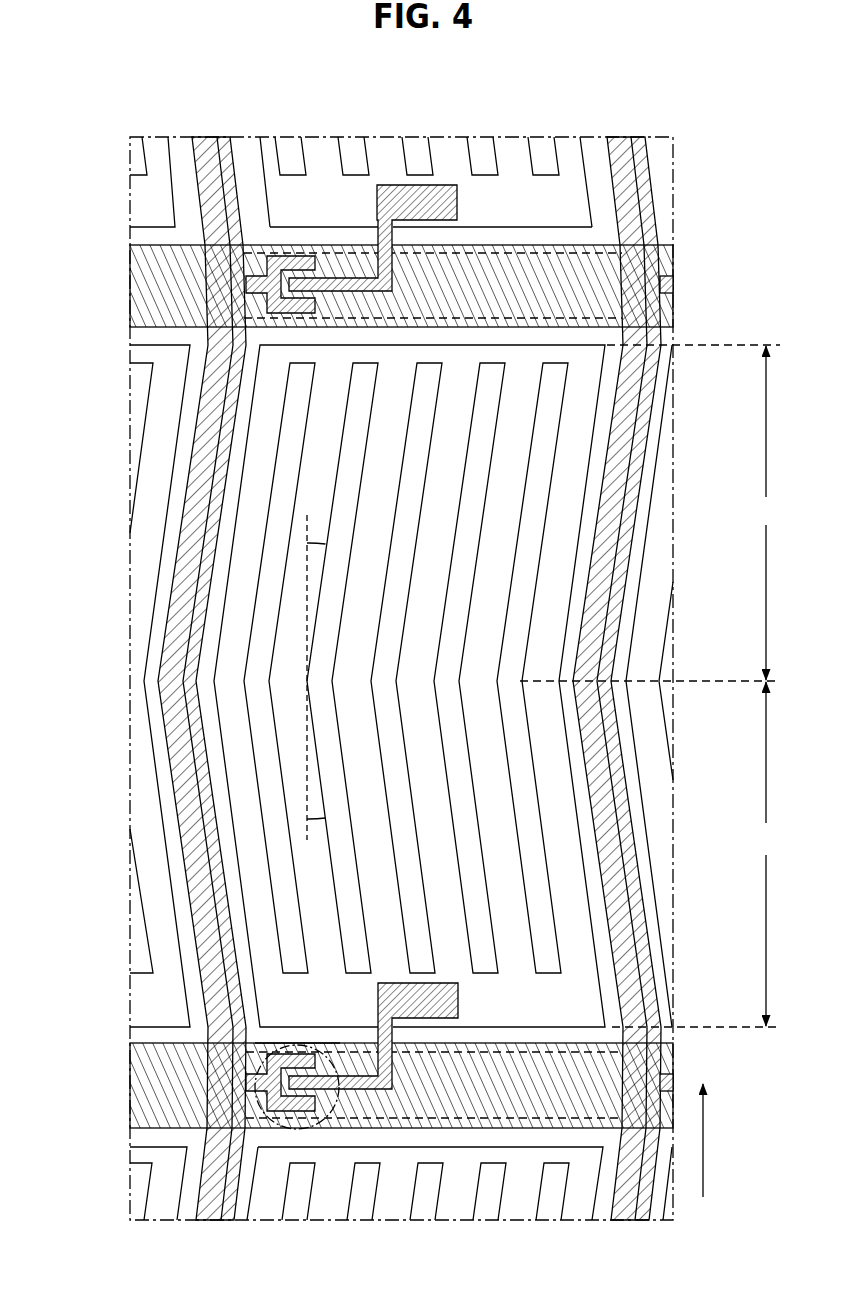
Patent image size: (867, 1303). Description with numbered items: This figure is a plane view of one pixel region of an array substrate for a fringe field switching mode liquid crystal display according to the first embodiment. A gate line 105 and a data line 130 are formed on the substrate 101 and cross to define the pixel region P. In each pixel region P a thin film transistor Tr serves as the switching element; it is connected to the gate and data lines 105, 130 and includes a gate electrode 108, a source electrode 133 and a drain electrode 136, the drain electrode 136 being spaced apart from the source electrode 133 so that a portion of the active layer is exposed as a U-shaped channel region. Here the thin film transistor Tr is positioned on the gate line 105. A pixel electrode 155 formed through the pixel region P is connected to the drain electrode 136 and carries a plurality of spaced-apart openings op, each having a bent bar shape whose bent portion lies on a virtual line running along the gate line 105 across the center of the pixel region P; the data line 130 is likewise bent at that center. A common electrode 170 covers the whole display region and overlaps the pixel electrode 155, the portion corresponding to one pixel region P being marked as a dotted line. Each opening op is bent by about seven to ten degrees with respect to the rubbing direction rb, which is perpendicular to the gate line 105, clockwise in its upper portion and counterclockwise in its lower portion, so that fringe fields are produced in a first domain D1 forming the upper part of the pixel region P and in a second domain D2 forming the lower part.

The substrate 101 is at (631, 117).
The gate line 105 is at (440, 1120).
The gate electrode 108 is at (290, 1050).
The data line 130 is at (183, 517).
The source electrode 133 is at (287, 1120).
The drain electrode 136 is at (342, 1090).
The pixel electrode 155 is at (376, 678).
The common electrode 170 is at (495, 256).
The pixel region P is at (502, 547).
The thin film transistor Tr is at (322, 1055).
The opening op is at (286, 474).
The first domain D1 is at (765, 513).
The second domain D2 is at (765, 854).
The rubbing direction rb is at (715, 1140).